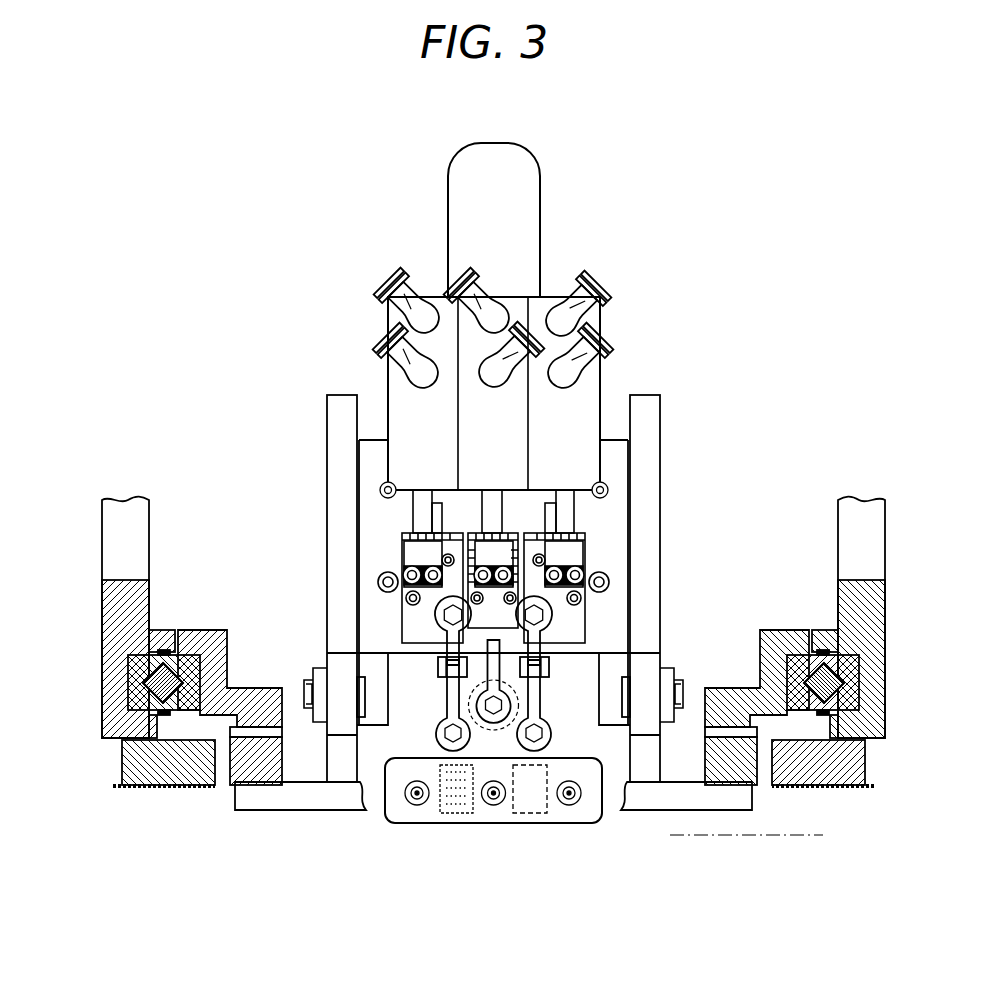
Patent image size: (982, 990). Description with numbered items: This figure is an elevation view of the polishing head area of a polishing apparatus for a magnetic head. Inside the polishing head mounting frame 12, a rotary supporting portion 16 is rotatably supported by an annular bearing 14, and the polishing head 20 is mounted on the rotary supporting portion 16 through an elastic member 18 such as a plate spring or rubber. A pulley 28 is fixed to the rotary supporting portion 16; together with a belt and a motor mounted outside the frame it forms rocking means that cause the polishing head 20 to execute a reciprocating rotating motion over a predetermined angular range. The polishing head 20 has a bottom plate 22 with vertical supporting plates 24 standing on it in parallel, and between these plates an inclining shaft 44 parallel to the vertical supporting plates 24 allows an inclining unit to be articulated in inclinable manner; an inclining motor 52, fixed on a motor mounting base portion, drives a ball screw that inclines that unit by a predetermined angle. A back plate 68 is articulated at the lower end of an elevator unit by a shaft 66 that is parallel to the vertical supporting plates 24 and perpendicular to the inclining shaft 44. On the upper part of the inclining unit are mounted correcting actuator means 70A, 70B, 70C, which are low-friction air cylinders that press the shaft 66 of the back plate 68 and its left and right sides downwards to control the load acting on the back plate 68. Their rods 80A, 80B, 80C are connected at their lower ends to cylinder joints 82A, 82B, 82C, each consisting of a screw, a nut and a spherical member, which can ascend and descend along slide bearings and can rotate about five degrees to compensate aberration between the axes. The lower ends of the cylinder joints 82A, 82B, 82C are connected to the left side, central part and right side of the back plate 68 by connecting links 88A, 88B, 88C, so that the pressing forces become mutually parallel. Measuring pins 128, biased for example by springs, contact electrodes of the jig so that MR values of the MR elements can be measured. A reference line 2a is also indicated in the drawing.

The reference line 2a is at (818, 840).
The polishing head mounting frame 12 is at (107, 604).
The annular bearing 14 is at (130, 692).
The rotary supporting portion 16 is at (224, 667).
The elastic member 18 is at (276, 734).
The polishing head 20 is at (705, 348).
The bottom plate 22 is at (277, 800).
The vertical supporting plates 24 is at (341, 395).
The pulley 28 is at (130, 752).
The inclining shaft 44 is at (312, 668).
The inclining motor 52 is at (540, 176).
The shaft 66 is at (493, 713).
The back plate 68 is at (437, 712).
The correcting actuator means 70A is at (432, 297).
The correcting actuator means 70B is at (508, 297).
The correcting actuator means 70C is at (548, 300).
The rod 80A is at (392, 462).
The rod 80B is at (492, 497).
The rod 80C is at (562, 513).
The cylinder joint 82A is at (412, 556).
The cylinder joint 82B is at (470, 538).
The cylinder joint 82C is at (580, 552).
The connecting link 88A is at (448, 645).
The connecting link 88B is at (490, 670).
The connecting link 88C is at (550, 697).
The measuring pins 128 is at (453, 808).